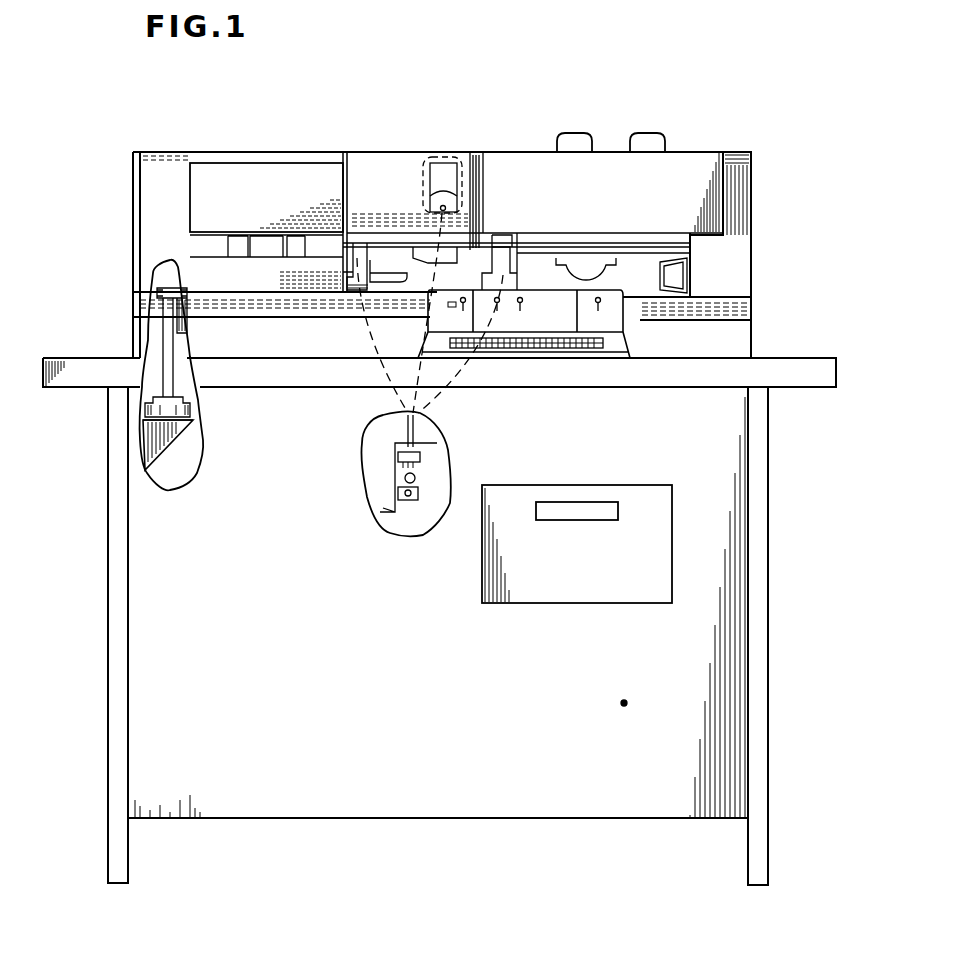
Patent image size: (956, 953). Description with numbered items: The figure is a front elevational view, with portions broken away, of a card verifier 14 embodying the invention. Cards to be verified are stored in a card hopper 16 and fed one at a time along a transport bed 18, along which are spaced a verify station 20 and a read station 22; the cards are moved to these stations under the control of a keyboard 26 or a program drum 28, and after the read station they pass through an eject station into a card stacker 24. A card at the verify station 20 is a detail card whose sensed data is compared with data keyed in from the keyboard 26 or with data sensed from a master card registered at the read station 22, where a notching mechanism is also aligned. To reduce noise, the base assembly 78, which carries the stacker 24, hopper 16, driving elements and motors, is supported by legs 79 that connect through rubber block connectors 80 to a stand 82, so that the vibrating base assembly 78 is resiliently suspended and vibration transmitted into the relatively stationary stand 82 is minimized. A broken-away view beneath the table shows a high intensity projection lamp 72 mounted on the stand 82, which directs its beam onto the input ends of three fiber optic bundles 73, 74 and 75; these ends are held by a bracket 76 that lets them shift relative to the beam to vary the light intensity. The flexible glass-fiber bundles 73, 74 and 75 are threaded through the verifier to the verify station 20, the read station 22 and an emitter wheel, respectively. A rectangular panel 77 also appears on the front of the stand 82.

The verifier 14 is at (440, 143).
The card hopper 16 is at (608, 147).
The transport bed 18 is at (628, 288).
The verify station 20 is at (497, 247).
The read station 22 is at (362, 253).
The card stacker 24 is at (253, 175).
The keyboard 26 is at (573, 348).
The program drum 28 is at (462, 163).
The projection lamp 72 is at (403, 478).
The fiber optic bundle 73 is at (417, 423).
The fiber optic bundle 74 is at (407, 422).
The fiber optic bundle 75 is at (410, 332).
The bracket 76 is at (418, 454).
The control panel 77 is at (482, 573).
The base assembly 78 is at (183, 312).
The legs 79 is at (163, 335).
The rubber block connectors 80 is at (128, 403).
The stand 82 is at (128, 450).